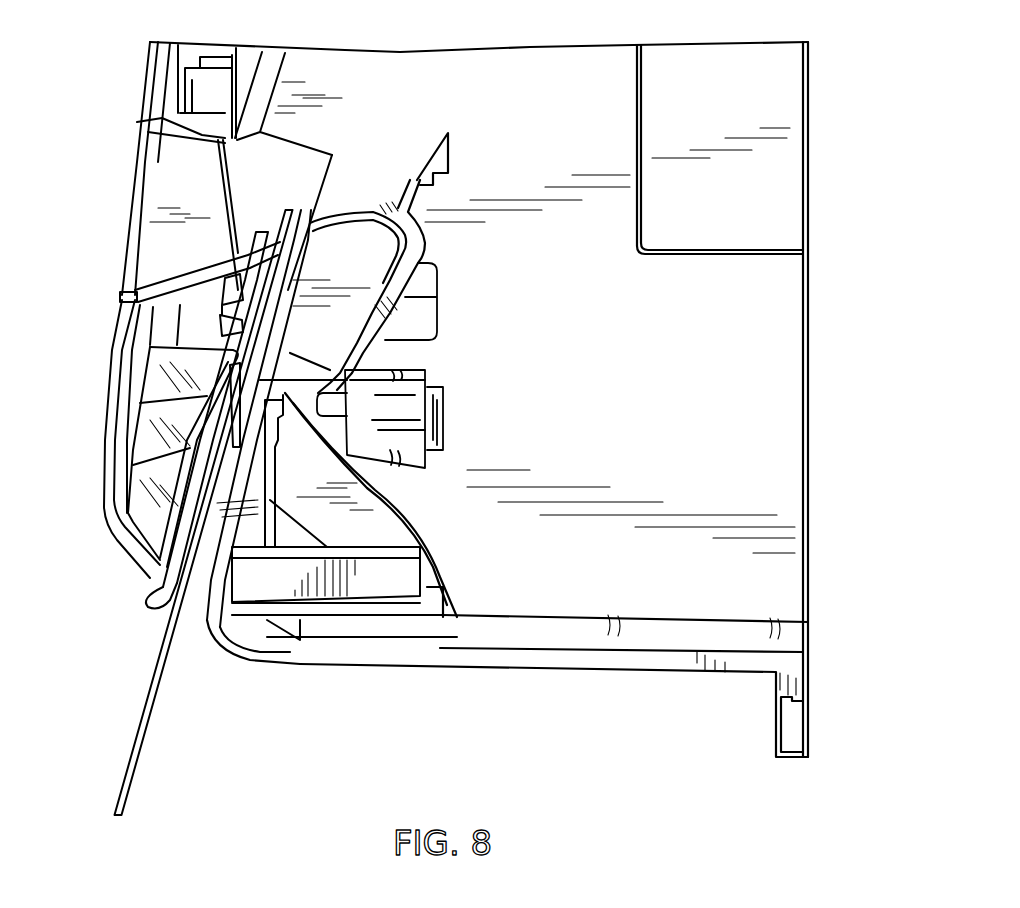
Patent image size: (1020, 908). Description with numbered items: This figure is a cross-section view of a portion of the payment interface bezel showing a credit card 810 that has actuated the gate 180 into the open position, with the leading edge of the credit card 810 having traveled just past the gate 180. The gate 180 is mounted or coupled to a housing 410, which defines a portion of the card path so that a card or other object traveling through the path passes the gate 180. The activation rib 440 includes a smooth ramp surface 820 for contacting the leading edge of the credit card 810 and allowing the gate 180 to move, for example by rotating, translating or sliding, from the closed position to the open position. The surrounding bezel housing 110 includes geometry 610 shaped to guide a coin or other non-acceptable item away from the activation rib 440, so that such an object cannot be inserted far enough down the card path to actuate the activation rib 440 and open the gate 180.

The bezel housing 110 is at (150, 177).
The gate 180 is at (334, 215).
The activation rib 440 is at (380, 238).
The smooth ramp surface 820 is at (290, 335).
The geometry 610 is at (118, 518).
The housing 410 is at (218, 578).
The credit card 810 is at (145, 735).